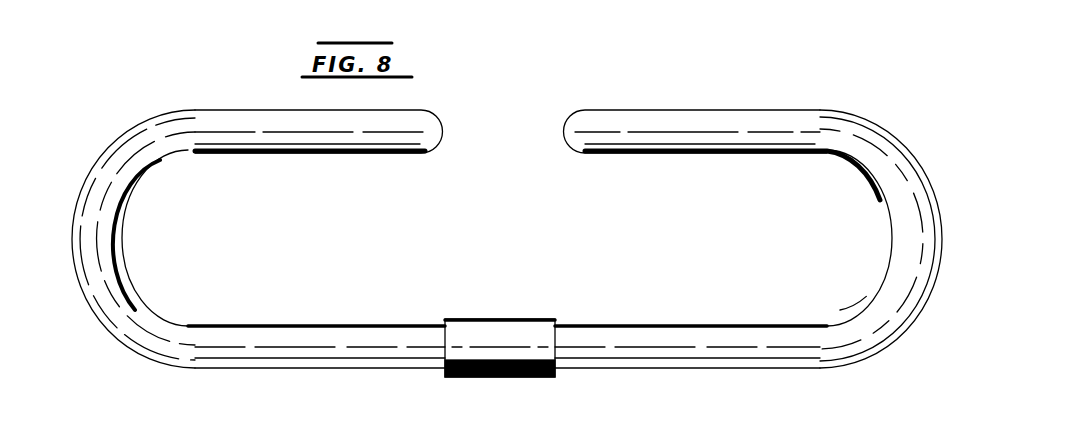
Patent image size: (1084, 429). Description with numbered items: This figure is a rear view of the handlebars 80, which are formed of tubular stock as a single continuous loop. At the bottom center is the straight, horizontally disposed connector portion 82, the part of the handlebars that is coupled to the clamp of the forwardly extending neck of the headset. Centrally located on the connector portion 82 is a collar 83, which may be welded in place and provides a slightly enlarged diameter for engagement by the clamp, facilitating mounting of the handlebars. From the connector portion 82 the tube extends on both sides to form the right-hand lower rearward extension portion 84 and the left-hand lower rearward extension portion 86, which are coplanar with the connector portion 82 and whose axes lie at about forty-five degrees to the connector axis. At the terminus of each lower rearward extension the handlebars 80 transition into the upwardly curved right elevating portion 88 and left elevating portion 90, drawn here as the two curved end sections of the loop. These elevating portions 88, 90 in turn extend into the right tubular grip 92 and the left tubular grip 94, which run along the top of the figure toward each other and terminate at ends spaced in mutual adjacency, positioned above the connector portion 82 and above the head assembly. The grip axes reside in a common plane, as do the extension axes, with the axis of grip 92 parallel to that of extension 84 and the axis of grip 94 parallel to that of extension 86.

The handlebars 80 is at (800, 78).
The connector portion 82 is at (545, 298).
The collar 83 is at (497, 326).
The right-hand side lower rearward extension portion 84 is at (728, 325).
The left-hand side lower rearward extension portion 86 is at (270, 325).
The right elevating portion 88 is at (892, 232).
The left elevating portion 90 is at (122, 232).
The right tubular grip 92 is at (722, 110).
The left tubular grip 94 is at (252, 110).